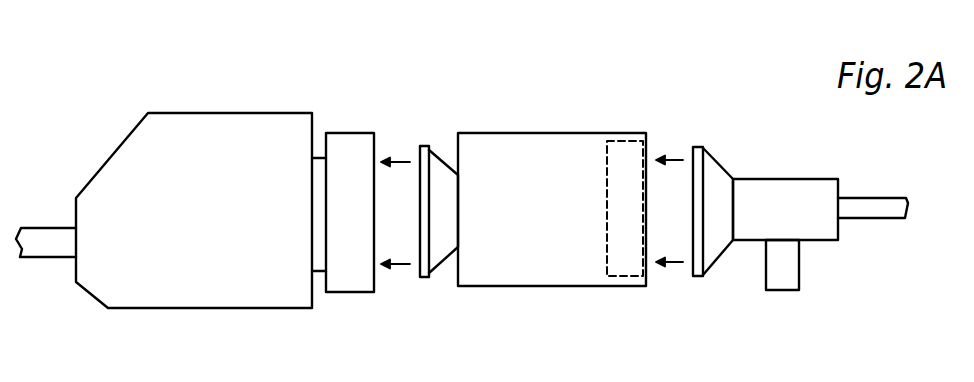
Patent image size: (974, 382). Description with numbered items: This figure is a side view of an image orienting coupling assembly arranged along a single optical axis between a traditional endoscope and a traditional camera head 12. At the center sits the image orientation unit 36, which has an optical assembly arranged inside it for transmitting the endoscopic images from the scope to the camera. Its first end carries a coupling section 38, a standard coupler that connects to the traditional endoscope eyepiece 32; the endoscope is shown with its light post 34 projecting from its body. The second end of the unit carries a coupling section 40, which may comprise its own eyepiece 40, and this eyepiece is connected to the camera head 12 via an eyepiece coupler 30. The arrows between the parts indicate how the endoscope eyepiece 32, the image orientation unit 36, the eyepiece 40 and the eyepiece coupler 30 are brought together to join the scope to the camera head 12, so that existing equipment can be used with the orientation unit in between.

The camera head 12 is at (168, 304).
The eyepiece coupler 30 is at (359, 288).
The endoscope eyepiece 32 is at (717, 170).
The light post 34 is at (787, 290).
The image orientation unit 36 is at (533, 279).
The coupling section 38 is at (607, 208).
The coupling section 40 is at (437, 158).